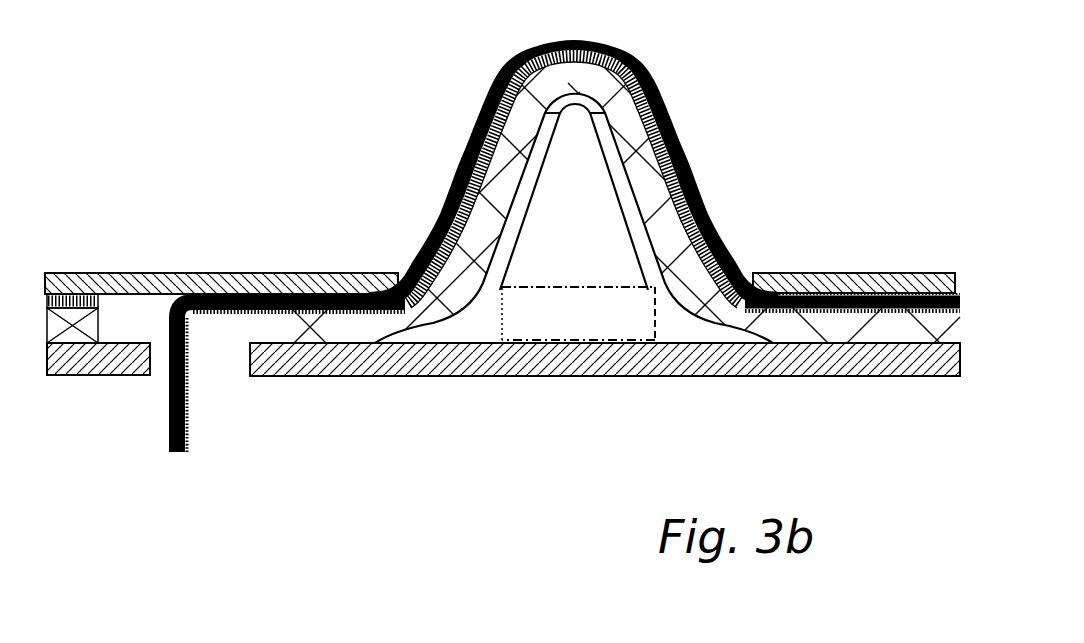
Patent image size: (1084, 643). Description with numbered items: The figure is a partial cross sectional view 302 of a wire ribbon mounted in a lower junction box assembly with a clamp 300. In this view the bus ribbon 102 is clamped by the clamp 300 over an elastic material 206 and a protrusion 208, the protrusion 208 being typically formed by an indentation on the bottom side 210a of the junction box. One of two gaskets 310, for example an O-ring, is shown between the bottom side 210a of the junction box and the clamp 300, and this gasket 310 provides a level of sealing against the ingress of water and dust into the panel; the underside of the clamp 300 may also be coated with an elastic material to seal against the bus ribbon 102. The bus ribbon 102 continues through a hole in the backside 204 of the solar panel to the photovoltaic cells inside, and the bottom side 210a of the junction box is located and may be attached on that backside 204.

The bus ribbon 102 is at (693, 150).
The backside of solar panel 204 is at (122, 365).
The elastic material 206 is at (683, 120).
The protrusion 208 is at (490, 167).
The bottom side of junction box 210a is at (70, 333).
The clamp 300 is at (205, 282).
The partial cross sectional view 302 is at (337, 447).
The gasket 310 is at (83, 297).